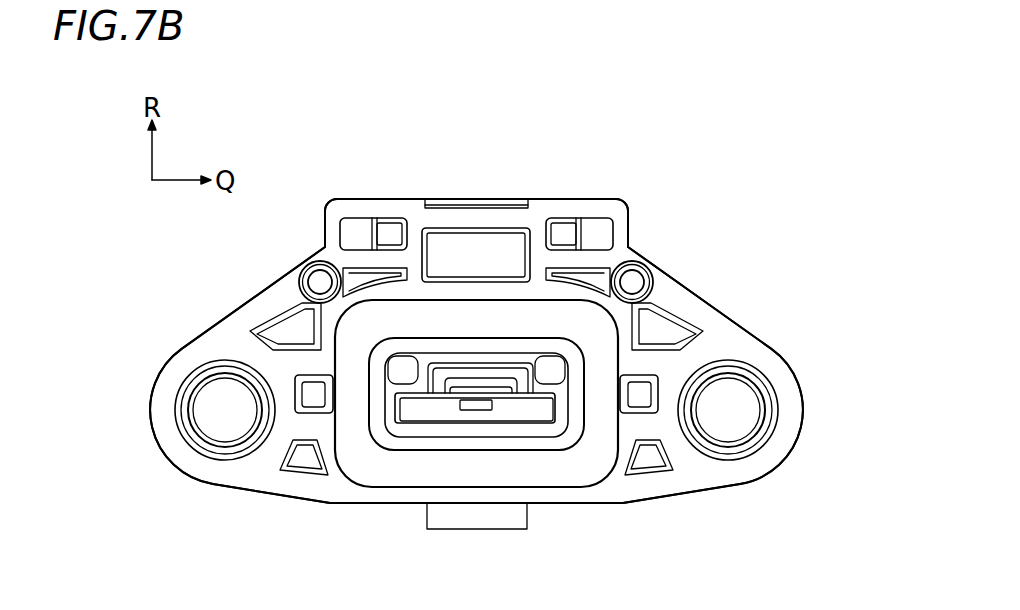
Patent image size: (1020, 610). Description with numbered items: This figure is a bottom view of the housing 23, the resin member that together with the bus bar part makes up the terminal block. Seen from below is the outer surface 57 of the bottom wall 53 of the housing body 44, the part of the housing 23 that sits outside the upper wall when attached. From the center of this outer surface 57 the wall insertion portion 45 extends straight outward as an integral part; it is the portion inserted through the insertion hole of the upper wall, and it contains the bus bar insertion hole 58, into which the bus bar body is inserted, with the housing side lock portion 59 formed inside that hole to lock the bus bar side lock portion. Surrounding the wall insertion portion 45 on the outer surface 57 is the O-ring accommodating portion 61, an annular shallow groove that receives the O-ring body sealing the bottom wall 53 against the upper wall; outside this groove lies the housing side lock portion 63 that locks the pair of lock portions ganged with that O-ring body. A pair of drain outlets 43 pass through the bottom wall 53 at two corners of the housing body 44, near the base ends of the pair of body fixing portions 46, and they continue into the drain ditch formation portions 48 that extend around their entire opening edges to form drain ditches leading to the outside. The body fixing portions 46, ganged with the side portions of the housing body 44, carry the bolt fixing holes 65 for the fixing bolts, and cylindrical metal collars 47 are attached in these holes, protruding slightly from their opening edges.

The housing 23 is at (722, 188).
The drain outlets 43 is at (357, 233).
The housing body 44 is at (476, 198).
The wall insertion portion 45 is at (423, 437).
The body fixing portions 46 is at (225, 338).
The collars 47 is at (210, 450).
The drain ditch formation portions 48 is at (326, 236).
The bottom wall 53 is at (542, 217).
The outer surface 57 is at (620, 208).
The bus bar insertion hole 58 is at (450, 413).
The housing side lock portion 59 is at (477, 405).
The O-ring accommodating portion 61 is at (365, 457).
The housing side lock portion 63 is at (312, 393).
The bolt fixing holes 65 is at (215, 410).